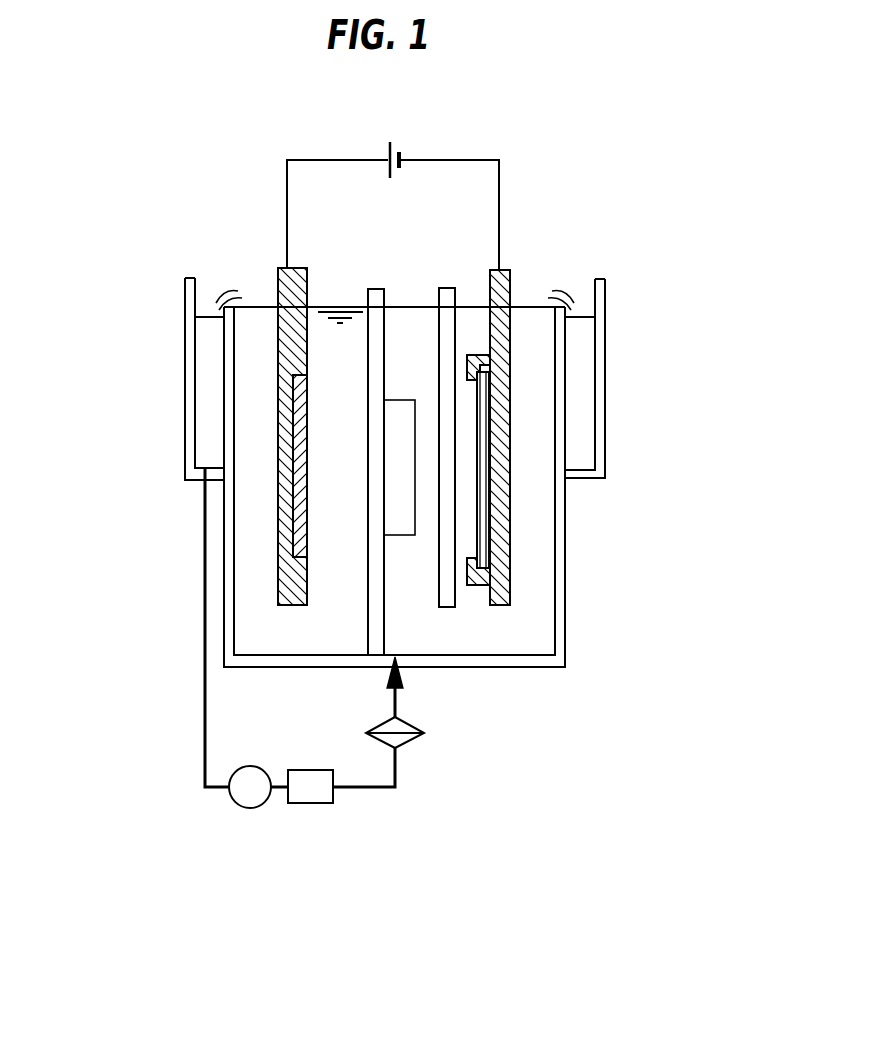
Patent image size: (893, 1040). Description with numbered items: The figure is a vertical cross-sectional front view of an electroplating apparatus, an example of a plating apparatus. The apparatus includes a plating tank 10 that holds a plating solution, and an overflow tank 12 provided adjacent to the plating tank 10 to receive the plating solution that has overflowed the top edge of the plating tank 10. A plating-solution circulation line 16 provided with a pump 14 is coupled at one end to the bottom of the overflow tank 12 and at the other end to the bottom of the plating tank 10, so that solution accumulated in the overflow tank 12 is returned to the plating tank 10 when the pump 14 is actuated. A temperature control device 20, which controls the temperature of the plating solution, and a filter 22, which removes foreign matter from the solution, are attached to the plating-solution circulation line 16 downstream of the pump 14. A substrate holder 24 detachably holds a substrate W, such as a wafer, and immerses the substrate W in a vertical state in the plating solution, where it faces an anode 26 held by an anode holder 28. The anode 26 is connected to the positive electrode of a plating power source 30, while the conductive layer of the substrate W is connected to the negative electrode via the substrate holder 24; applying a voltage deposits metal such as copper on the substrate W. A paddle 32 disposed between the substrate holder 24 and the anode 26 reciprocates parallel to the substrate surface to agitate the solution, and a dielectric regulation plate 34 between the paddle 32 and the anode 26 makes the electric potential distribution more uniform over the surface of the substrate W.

The plating tank 10 is at (565, 577).
The overflow tank 12 is at (183, 292).
The pump 14 is at (245, 808).
The plating-solution circulation line 16 is at (375, 790).
The temperature control device 20 is at (318, 803).
The filter 22 is at (410, 742).
The substrate holder 24 is at (480, 368).
The anode 26 is at (308, 508).
The anode holder 28 is at (280, 287).
The plating power source 30 is at (399, 148).
The paddle 32 is at (447, 288).
The regulation plate 34 is at (375, 288).
The substrate W is at (483, 522).